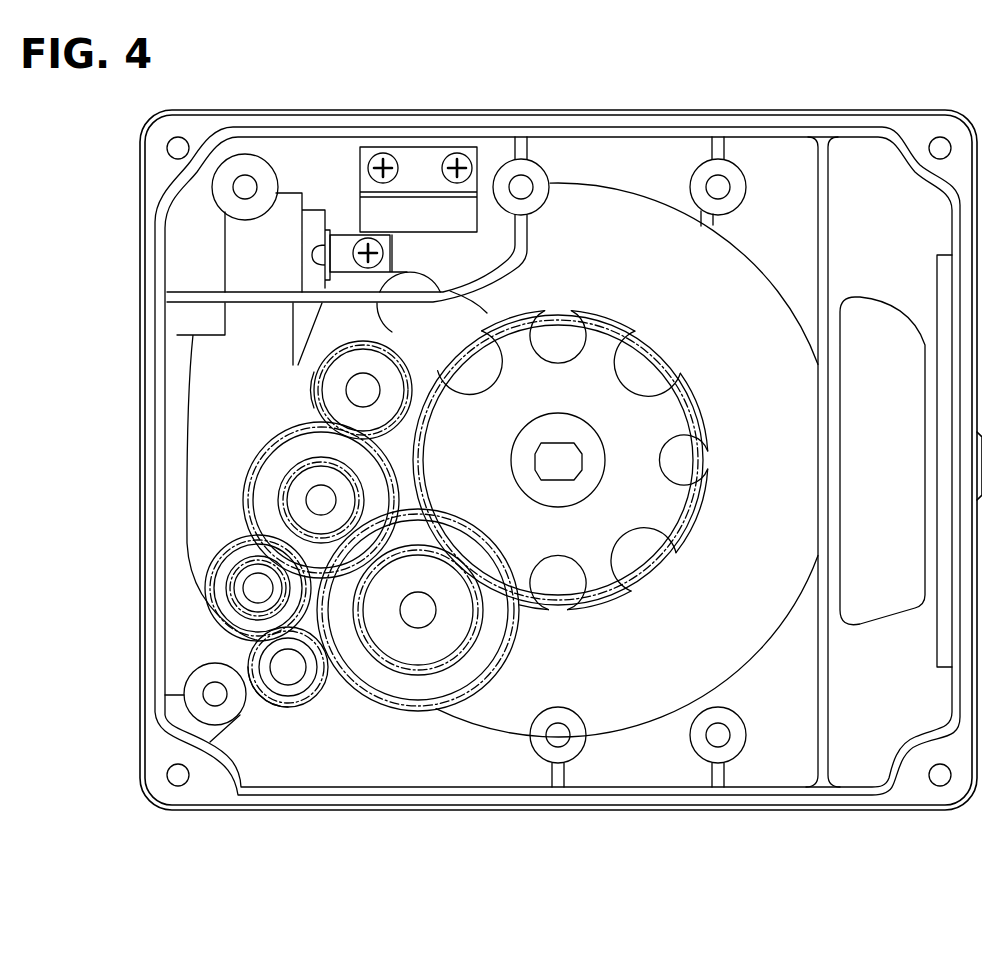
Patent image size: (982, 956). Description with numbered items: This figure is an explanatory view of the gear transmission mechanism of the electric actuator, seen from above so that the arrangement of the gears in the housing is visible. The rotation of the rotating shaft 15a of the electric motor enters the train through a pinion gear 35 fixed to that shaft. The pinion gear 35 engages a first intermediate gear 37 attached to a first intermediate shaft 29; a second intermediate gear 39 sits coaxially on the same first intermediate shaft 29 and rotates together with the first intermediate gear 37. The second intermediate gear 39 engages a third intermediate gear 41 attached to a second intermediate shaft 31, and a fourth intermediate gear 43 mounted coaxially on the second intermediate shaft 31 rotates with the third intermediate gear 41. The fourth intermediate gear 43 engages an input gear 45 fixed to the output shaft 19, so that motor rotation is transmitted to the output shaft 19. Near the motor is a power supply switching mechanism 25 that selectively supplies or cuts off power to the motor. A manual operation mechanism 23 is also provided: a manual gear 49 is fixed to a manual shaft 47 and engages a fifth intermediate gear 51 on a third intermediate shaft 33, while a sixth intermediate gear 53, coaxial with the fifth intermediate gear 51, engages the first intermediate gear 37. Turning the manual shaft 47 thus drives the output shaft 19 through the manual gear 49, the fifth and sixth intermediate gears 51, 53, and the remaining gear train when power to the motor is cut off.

The rotating shaft 15a is at (314, 388).
The output shaft 19 is at (573, 493).
The manual operation mechanism 23 is at (285, 677).
The power supply switching mechanism 25 is at (342, 155).
The first intermediate shaft 29 is at (320, 498).
The second intermediate shaft 31 is at (417, 617).
The third intermediate shaft 33 is at (258, 589).
The pinion gear 35 is at (363, 390).
The first intermediate gear 37 is at (273, 433).
The second intermediate gear 39 is at (278, 472).
The third intermediate gear 41 is at (390, 712).
The fourth intermediate gear 43 is at (453, 673).
The input gear 45 is at (557, 618).
The manual shaft 47 is at (280, 716).
The manual gear 49 is at (318, 707).
The fifth intermediate gear 51 is at (220, 632).
The sixth intermediate gear 53 is at (228, 556).